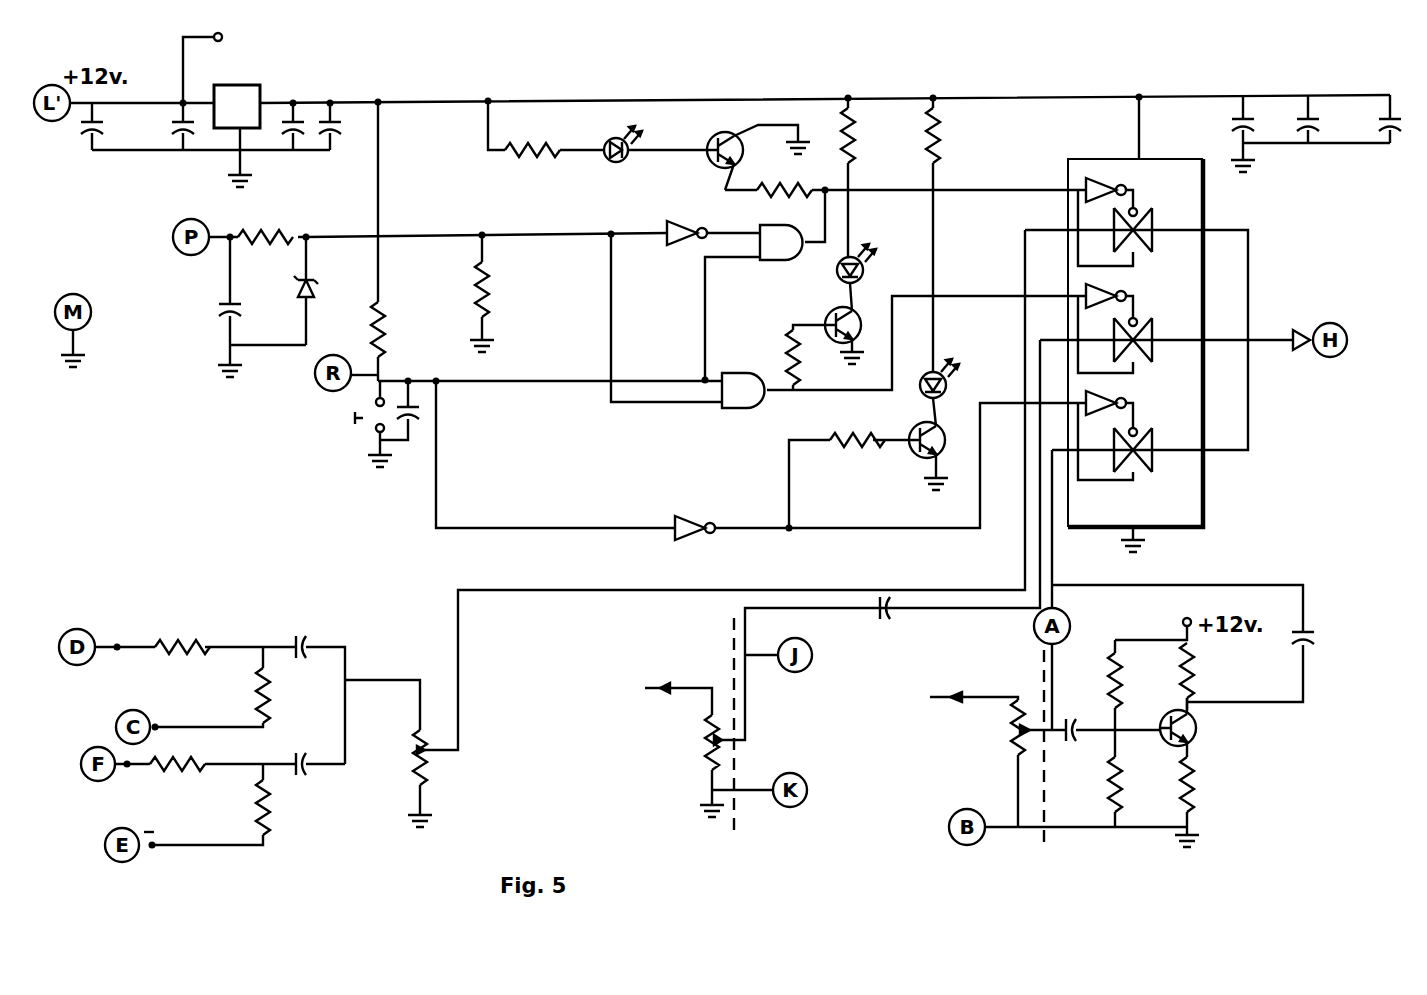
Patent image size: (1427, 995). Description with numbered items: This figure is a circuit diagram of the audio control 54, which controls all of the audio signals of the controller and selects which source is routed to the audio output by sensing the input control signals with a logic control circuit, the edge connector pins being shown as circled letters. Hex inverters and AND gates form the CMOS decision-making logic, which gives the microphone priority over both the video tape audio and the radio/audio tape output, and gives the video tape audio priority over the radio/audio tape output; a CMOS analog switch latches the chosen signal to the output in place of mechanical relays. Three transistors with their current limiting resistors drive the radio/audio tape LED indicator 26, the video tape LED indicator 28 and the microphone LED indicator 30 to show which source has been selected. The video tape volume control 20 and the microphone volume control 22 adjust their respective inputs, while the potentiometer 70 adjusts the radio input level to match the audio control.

The audio control 54 is at (681, 80).
The radio/audio tape LED indicator 26 is at (634, 147).
The video tape LED indicator 28 is at (864, 271).
The microphone LED indicator 30 is at (947, 388).
The video tape volume control 20 is at (705, 760).
The microphone volume control 22 is at (1012, 753).
The potentiometer 70 is at (410, 768).